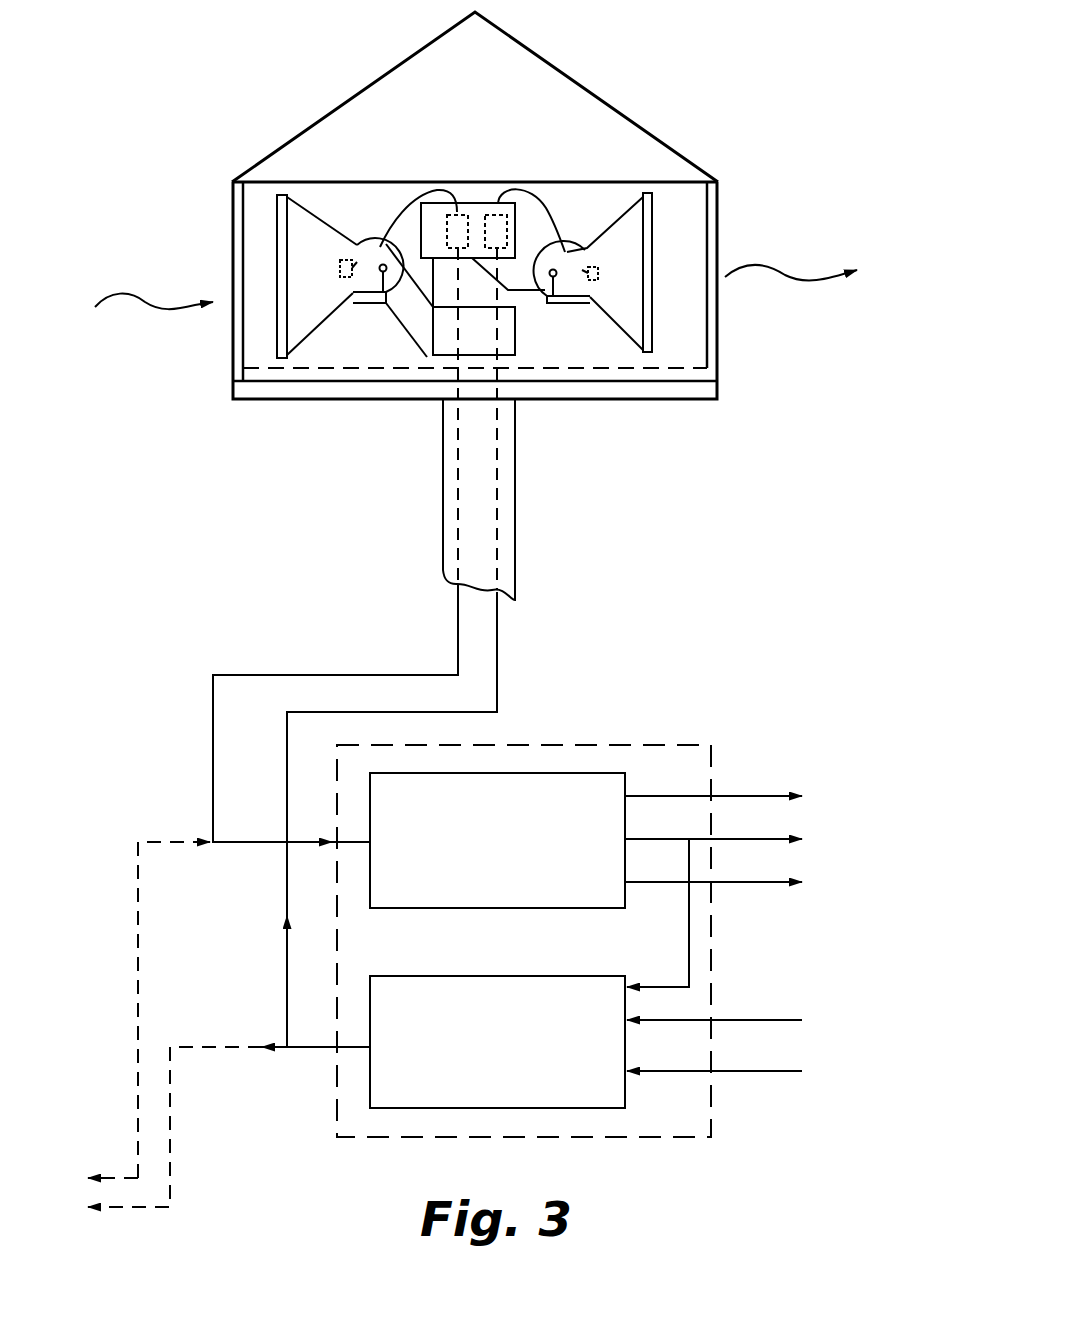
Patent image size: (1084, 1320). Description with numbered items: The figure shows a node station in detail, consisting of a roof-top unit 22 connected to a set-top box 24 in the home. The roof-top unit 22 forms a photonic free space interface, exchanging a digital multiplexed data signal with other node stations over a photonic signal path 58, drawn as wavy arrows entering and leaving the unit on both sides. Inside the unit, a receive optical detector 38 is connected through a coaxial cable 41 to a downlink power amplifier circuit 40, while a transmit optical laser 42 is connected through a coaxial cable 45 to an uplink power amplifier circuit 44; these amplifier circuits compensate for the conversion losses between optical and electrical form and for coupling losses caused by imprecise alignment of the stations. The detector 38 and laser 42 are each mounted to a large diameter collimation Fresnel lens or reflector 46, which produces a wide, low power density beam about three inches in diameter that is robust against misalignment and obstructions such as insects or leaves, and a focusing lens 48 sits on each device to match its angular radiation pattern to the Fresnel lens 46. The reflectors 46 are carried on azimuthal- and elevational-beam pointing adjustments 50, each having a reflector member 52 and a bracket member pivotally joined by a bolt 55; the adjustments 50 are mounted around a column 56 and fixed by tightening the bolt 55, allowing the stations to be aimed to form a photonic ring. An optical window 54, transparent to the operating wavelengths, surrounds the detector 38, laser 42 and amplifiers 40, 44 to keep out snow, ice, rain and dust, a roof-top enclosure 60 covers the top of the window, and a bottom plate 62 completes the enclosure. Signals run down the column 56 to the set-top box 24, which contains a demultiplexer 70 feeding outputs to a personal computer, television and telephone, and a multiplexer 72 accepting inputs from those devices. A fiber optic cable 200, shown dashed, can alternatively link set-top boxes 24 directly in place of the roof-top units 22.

The roof-top unit 22 is at (582, 86).
The set-top box 24 is at (655, 743).
The receive optical detector 38 is at (342, 278).
The downlink power amplifier circuit 40 is at (468, 214).
The coaxial cable 41 is at (400, 208).
The transmit optical laser 42 is at (593, 300).
The uplink power amplifier circuit 44 is at (488, 214).
The coaxial cable 45 is at (542, 202).
The collimation Fresnel lens 46 is at (277, 233).
The focusing lens 48 is at (338, 266).
The azimuthal- and elevational-beam pointing adjustments 50 is at (440, 335).
The reflector member 52 is at (394, 300).
The optical window 54 is at (527, 228).
The bolt 55 is at (384, 303).
The column 56 is at (515, 490).
The photonic signal path 58 is at (147, 303).
The roof-top enclosure 60 is at (392, 68).
The bottom plate 62 is at (657, 388).
The demultiplexer 70 is at (540, 773).
The multiplexer 72 is at (592, 1112).
The fiber optic cable 200 is at (138, 905).